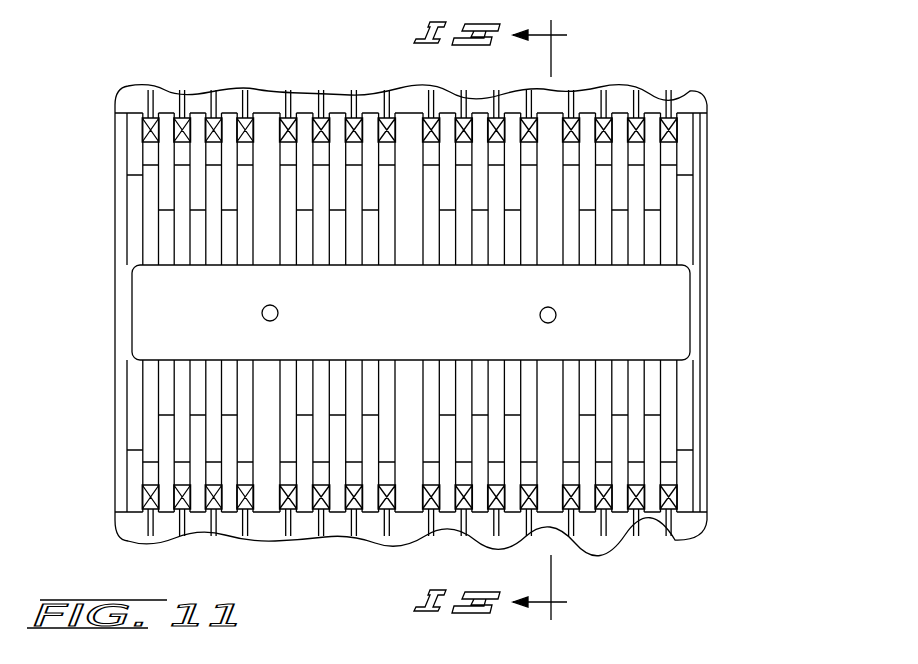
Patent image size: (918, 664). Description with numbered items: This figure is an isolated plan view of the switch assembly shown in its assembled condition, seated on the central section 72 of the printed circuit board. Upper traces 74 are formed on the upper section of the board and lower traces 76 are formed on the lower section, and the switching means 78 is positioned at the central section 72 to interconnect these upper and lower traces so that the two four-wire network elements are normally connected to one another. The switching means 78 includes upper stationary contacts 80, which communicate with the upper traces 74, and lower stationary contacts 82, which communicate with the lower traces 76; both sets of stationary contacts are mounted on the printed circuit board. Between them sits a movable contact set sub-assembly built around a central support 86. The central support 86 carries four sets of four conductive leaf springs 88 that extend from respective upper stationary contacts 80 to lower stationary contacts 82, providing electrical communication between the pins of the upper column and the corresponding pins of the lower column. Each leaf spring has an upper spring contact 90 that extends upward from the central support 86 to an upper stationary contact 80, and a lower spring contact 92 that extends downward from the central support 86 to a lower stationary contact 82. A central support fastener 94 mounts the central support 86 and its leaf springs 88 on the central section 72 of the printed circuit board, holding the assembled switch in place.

The central section 72 is at (688, 96).
The upper traces 74 is at (207, 92).
The lower traces 76 is at (205, 512).
The switching means 78 is at (418, 326).
The upper stationary contacts 80 is at (285, 94).
The lower stationary contacts 82 is at (192, 508).
The central support 86 is at (441, 327).
The leaf springs 88 is at (388, 249).
The upper spring contacts 90 is at (183, 147).
The lower spring contacts 92 is at (310, 483).
The central support fastener 94 is at (262, 318).